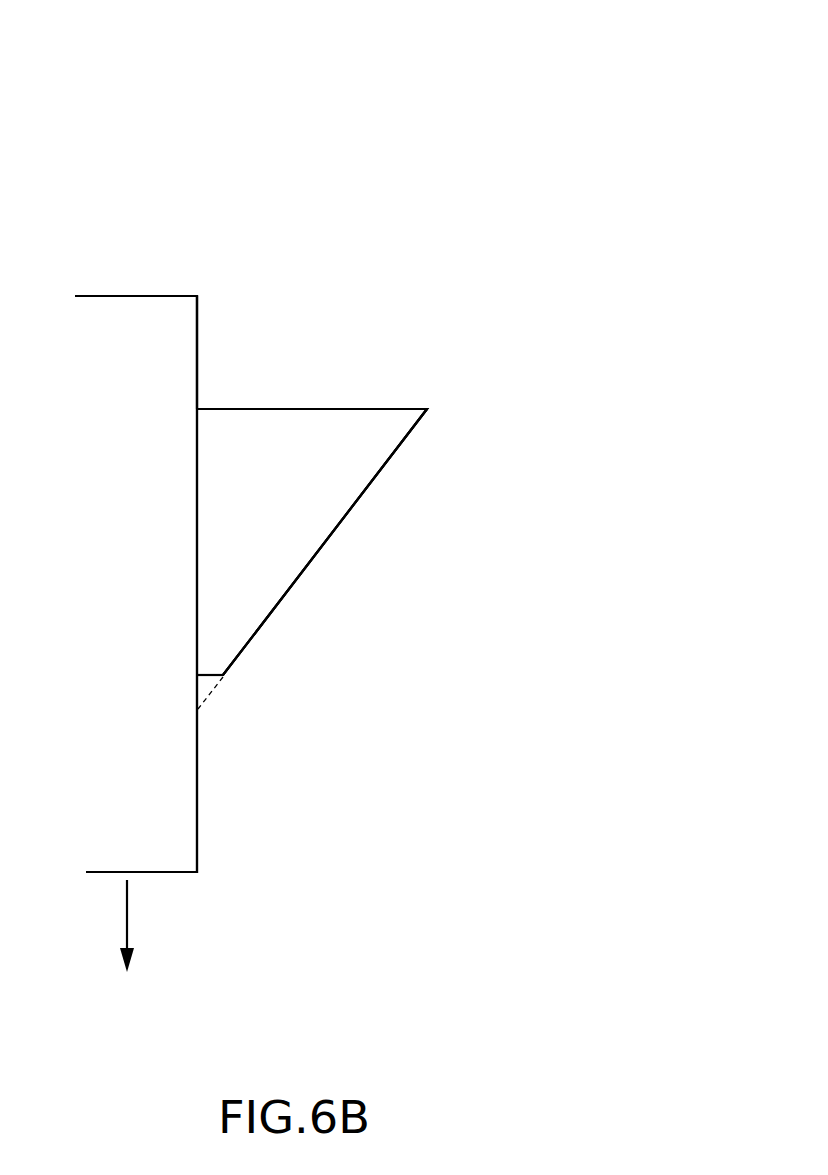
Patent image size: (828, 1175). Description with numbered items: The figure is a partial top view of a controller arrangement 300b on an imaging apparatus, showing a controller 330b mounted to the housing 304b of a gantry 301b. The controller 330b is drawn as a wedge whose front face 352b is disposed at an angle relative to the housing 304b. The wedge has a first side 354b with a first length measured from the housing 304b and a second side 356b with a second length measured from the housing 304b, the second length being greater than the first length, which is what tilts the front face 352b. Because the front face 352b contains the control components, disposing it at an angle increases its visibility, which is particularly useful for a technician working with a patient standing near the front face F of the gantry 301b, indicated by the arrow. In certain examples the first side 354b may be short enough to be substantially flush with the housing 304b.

The fastening assembly 300b is at (436, 126).
The gantry 301b is at (113, 537).
The housing 304b is at (212, 347).
The second side 356b is at (355, 409).
The controller 330b is at (348, 495).
The front face 352b is at (332, 559).
The first side 354b is at (215, 675).
The front face of the gantry F is at (136, 926).